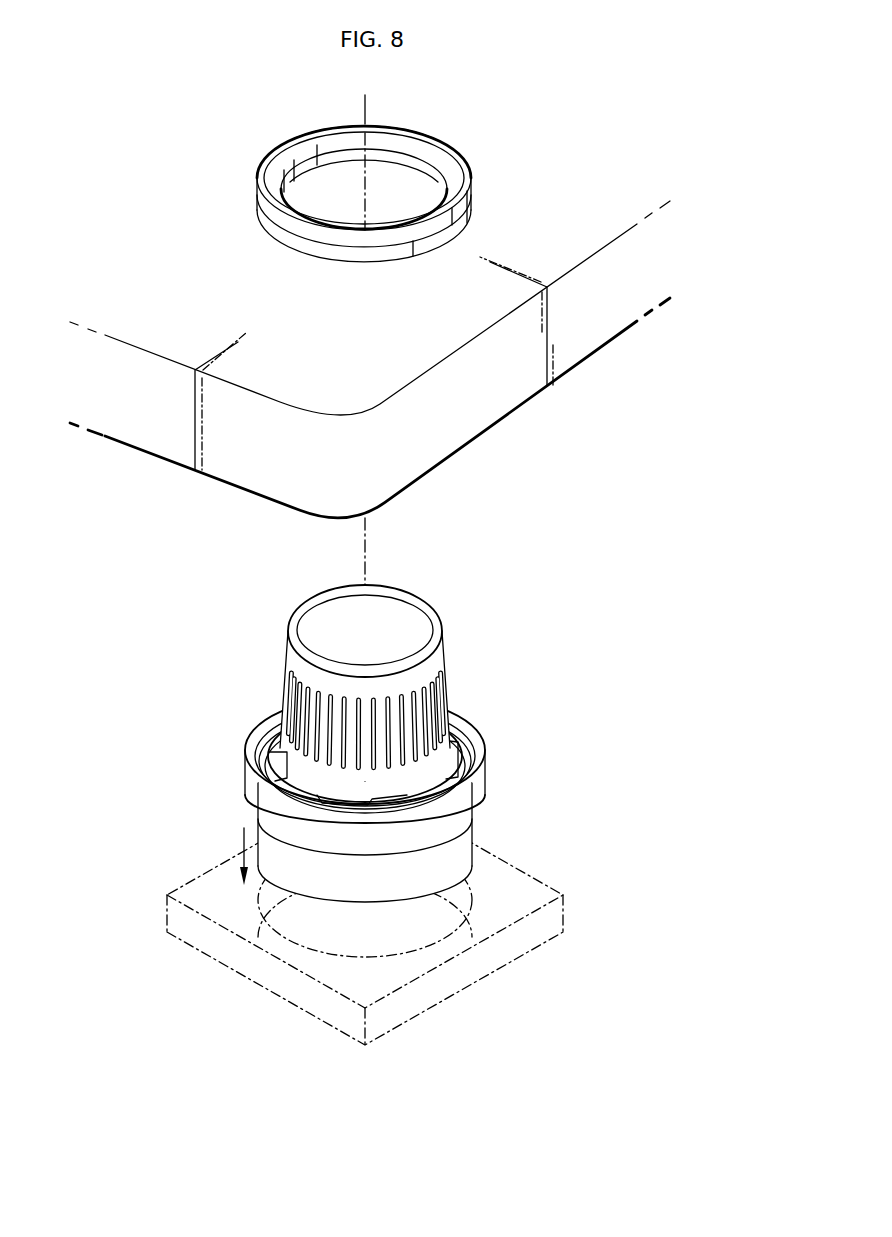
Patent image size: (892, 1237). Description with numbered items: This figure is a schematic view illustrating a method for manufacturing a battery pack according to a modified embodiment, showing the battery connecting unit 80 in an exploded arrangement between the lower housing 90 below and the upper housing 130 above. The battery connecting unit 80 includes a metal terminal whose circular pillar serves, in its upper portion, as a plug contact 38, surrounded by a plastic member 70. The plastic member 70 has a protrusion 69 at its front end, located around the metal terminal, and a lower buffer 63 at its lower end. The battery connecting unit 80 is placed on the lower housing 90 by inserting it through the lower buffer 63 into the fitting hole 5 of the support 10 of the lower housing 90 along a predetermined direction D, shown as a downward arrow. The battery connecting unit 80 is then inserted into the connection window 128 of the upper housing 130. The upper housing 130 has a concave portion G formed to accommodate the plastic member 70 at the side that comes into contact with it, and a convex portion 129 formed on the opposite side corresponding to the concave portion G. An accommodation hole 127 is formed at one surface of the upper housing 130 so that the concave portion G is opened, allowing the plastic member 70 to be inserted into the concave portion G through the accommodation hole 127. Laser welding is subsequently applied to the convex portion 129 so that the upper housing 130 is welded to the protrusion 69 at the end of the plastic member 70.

The convex portion 129 is at (337, 200).
The connection window 128 is at (285, 215).
The accommodation hole 127 is at (384, 166).
The concave portion G is at (326, 166).
The upper housing 130 is at (170, 316).
The battery connecting unit 80 is at (414, 659).
The plug contact 38 is at (413, 630).
The protrusion 69 is at (258, 733).
The plastic member 70 is at (477, 797).
The lower buffer 63 is at (457, 850).
The predetermined direction D is at (244, 838).
The support 10 is at (334, 913).
The lower housing 90 is at (365, 970).
The fitting hole 5 is at (427, 907).